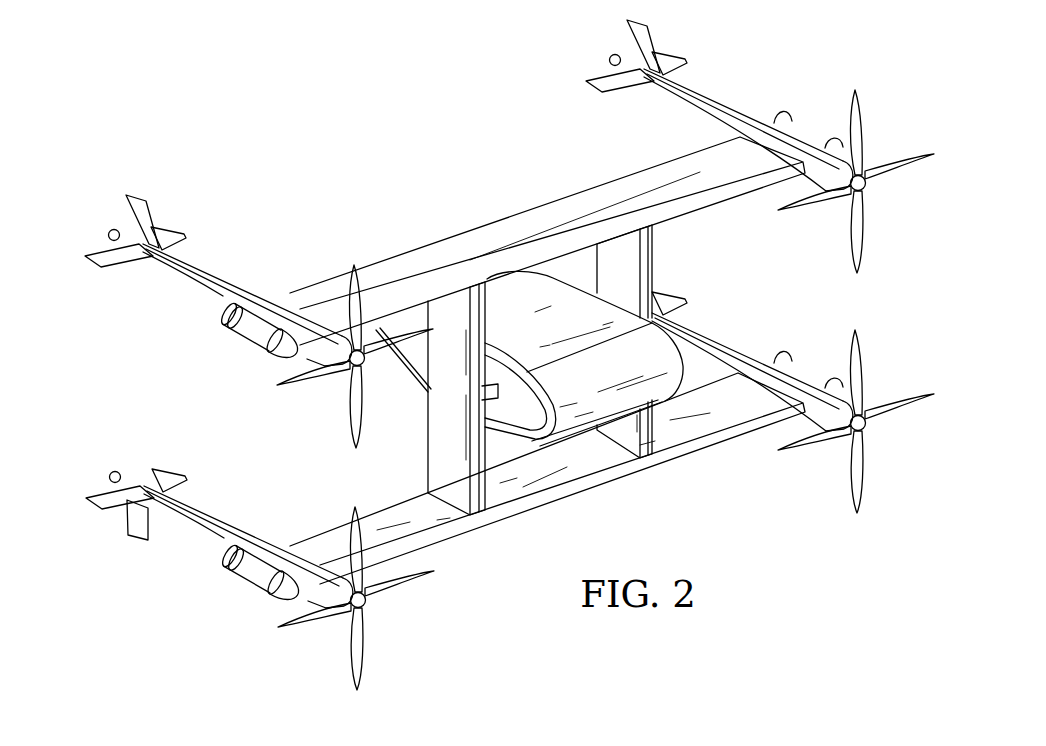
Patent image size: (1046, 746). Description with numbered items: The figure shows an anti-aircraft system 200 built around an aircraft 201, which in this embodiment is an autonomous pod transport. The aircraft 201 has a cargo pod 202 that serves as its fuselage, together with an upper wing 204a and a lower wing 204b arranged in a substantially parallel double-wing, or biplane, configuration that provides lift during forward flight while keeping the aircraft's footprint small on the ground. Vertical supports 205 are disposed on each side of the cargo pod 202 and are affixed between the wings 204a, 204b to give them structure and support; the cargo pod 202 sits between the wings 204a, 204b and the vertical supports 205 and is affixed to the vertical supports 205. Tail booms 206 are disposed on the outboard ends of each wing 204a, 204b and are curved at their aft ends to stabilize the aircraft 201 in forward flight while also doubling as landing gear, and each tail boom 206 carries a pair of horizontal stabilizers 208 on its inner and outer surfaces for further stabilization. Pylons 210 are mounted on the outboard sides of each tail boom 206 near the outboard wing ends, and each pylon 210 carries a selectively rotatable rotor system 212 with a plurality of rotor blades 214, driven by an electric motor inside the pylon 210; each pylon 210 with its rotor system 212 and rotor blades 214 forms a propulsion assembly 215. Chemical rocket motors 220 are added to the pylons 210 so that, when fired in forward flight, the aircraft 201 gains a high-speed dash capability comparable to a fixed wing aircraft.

The anti-aircraft system 200 is at (253, 104).
The aircraft 201 is at (366, 238).
The cargo pod 202 is at (607, 398).
The upper wing 204a is at (521, 221).
The lower wing 204b is at (545, 504).
The vertical support 205 is at (445, 456).
The tail boom 206 is at (117, 231).
The horizontal stabilizer 208 is at (171, 233).
The pylon 210 is at (268, 296).
The rotor system 212 is at (333, 400).
The rotor blade 214 is at (350, 441).
The propulsion assembly 215 is at (186, 311).
The chemical rocket motor 220 is at (253, 344).